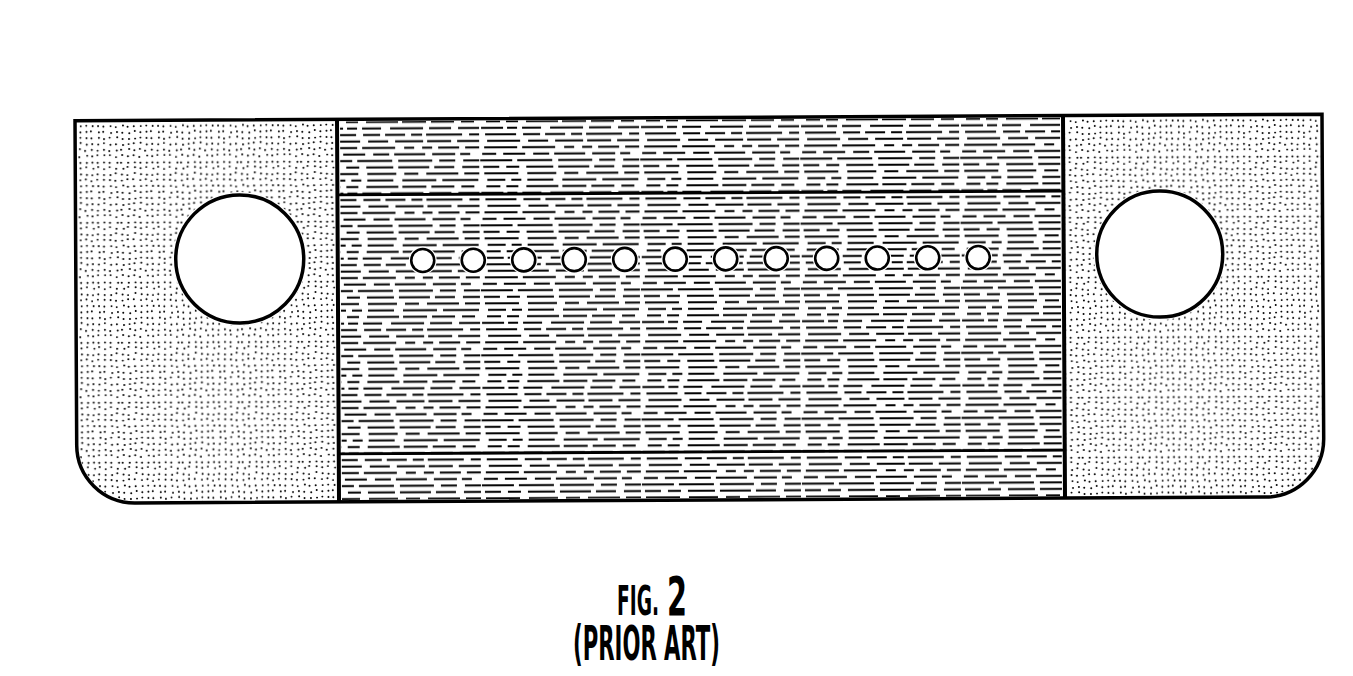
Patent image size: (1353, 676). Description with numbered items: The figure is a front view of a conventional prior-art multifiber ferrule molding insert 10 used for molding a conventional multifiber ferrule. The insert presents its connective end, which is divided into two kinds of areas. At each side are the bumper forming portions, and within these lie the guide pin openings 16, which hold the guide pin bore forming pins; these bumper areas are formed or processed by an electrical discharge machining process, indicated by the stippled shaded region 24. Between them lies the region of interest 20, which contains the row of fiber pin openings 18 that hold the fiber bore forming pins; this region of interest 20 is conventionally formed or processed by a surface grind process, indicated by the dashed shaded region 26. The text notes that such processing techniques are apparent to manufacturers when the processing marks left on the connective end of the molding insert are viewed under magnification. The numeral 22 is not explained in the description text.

The multifiber ferrule molding insert 10 is at (371, 79).
The guide pin openings 16 is at (241, 235).
The fiber pin openings 18 is at (300, 467).
The region of interest 20 is at (699, 165).
The conductor 22 is at (978, 253).
The shaded region indicating EDM process 24 is at (173, 423).
The shaded region indicating surface grind process 26 is at (937, 413).